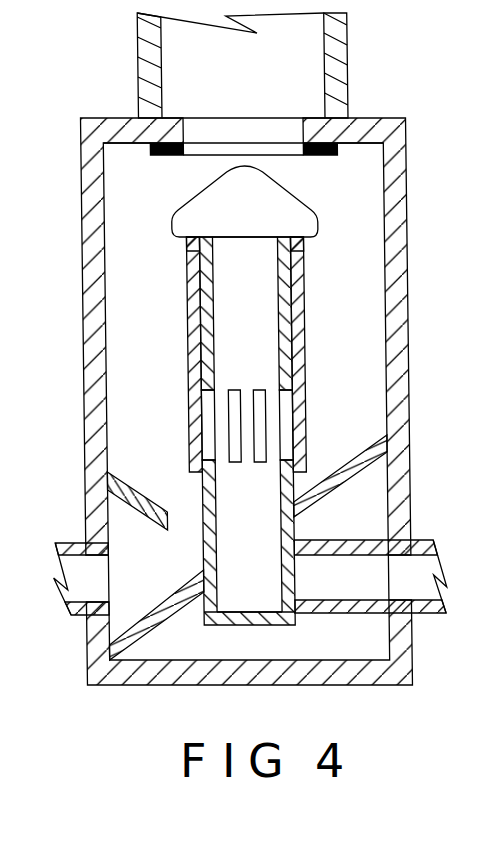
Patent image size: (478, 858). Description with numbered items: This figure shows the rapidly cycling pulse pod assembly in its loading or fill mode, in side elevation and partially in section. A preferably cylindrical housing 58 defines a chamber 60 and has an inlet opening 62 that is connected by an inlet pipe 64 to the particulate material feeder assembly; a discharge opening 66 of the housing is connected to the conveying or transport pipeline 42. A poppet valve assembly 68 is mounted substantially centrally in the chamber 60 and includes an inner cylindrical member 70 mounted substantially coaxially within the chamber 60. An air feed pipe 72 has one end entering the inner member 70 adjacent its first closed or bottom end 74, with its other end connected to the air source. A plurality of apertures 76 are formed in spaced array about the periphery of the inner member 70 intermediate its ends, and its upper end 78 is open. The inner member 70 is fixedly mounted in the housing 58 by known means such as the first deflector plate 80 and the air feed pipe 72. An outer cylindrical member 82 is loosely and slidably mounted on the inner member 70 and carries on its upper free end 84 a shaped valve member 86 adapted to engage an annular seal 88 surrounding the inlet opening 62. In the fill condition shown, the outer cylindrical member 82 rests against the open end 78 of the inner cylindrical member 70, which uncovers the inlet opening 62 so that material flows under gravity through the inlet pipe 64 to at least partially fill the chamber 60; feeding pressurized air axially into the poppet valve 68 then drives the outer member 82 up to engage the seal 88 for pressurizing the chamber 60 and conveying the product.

The conveying or transport pipeline 42 is at (62, 543).
The housing 58 is at (82, 362).
The chamber 60 is at (160, 327).
The inlet opening 62 is at (250, 106).
The inlet pipe 64 is at (139, 91).
The discharge opening 66 is at (108, 572).
The poppet valve assembly 68 is at (183, 420).
The inner cylindrical member 70 is at (203, 507).
The air feed pipe 72 is at (353, 530).
The first closed or bottom end 74 is at (242, 613).
The apertures 76 is at (263, 463).
The upper end 78 is at (226, 238).
The first deflector plate 80 is at (347, 462).
The outer cylindrical member 82 is at (304, 338).
The upper free end 84 is at (305, 238).
The shaped valve member 86 is at (293, 196).
The annular seal 88 is at (178, 153).